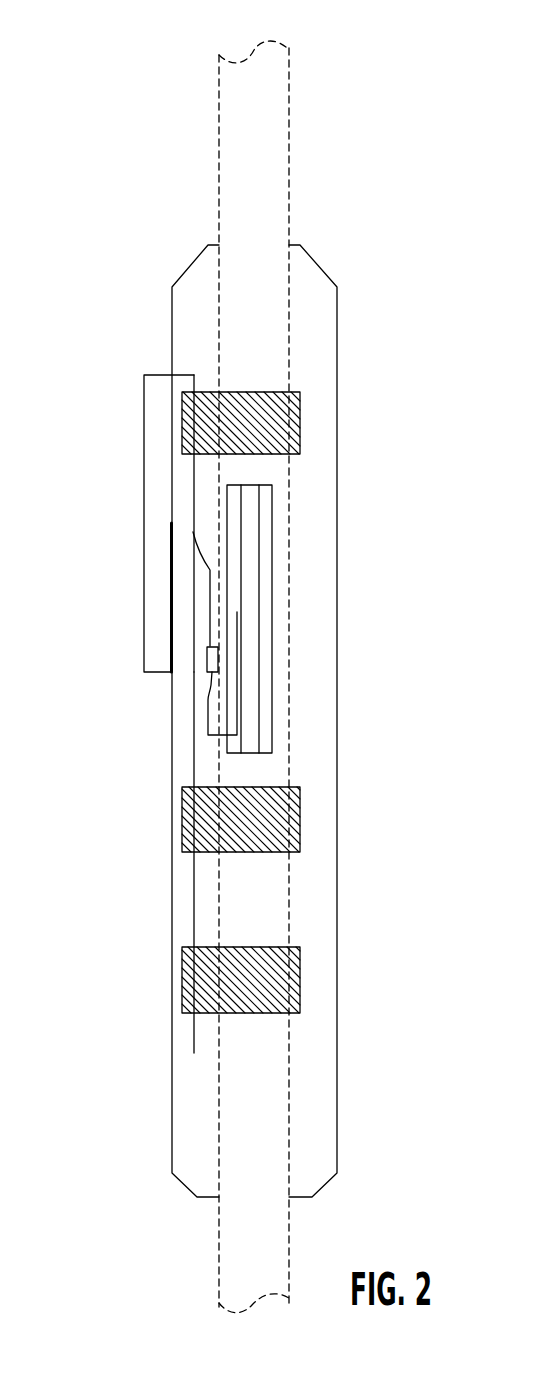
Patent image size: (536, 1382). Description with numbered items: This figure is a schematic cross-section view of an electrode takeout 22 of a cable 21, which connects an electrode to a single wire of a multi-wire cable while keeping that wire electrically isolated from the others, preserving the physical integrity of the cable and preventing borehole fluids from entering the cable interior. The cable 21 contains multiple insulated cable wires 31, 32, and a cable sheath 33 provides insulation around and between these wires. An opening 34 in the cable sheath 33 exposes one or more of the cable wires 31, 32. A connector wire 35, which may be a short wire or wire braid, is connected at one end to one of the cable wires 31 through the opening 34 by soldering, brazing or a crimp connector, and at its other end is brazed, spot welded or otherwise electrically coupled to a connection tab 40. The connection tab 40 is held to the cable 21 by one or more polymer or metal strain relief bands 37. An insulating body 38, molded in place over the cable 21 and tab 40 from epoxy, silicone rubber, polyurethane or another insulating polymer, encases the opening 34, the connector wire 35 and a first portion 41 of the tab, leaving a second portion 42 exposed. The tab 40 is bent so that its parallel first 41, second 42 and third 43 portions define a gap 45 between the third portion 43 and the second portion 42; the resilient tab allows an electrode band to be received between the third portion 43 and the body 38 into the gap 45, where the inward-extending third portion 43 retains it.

The cable 21 is at (258, 92).
The takeout 22 is at (128, 398).
The cable wire 31 is at (238, 698).
The cable wire 32 is at (260, 530).
The cable sheath 33 is at (280, 180).
The opening 34 is at (219, 656).
The connector wire 35 is at (201, 566).
The strain relief band 37 is at (278, 818).
The insulating body 38 is at (322, 912).
The connection tab 40 is at (145, 672).
The first portion 41 is at (194, 470).
The second portion 42 is at (142, 637).
The third portion 43 is at (170, 612).
The gap 45 is at (155, 497).